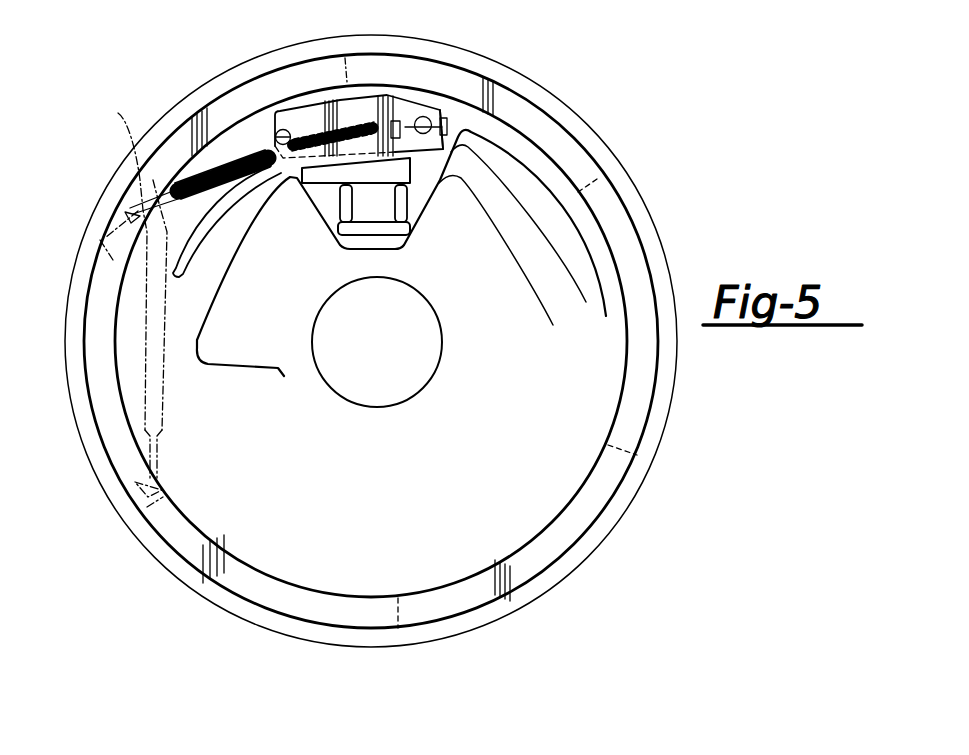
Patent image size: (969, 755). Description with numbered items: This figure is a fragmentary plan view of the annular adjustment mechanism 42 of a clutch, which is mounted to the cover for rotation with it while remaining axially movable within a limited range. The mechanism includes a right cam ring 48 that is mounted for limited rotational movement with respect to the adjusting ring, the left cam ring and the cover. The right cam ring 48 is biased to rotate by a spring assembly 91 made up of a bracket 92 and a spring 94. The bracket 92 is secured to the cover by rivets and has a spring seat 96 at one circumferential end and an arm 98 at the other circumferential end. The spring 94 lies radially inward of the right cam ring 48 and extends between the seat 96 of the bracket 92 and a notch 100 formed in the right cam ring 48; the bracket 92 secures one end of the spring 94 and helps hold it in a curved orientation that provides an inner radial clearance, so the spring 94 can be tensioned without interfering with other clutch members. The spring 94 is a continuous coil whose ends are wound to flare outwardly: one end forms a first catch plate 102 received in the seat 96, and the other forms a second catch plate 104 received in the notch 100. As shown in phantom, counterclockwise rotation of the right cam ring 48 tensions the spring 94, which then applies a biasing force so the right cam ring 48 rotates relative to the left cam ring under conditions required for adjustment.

The adjustment mechanism 42 is at (75, 446).
The right cam ring 48 is at (97, 262).
The spring assembly 91 is at (428, 163).
The bracket 92 is at (358, 110).
The spring 94 is at (233, 170).
The spring seat 96 is at (443, 137).
The arm 98 is at (191, 232).
The notch 100 is at (116, 205).
The first catch plate 102 is at (444, 126).
The second catch plate 104 is at (120, 114).